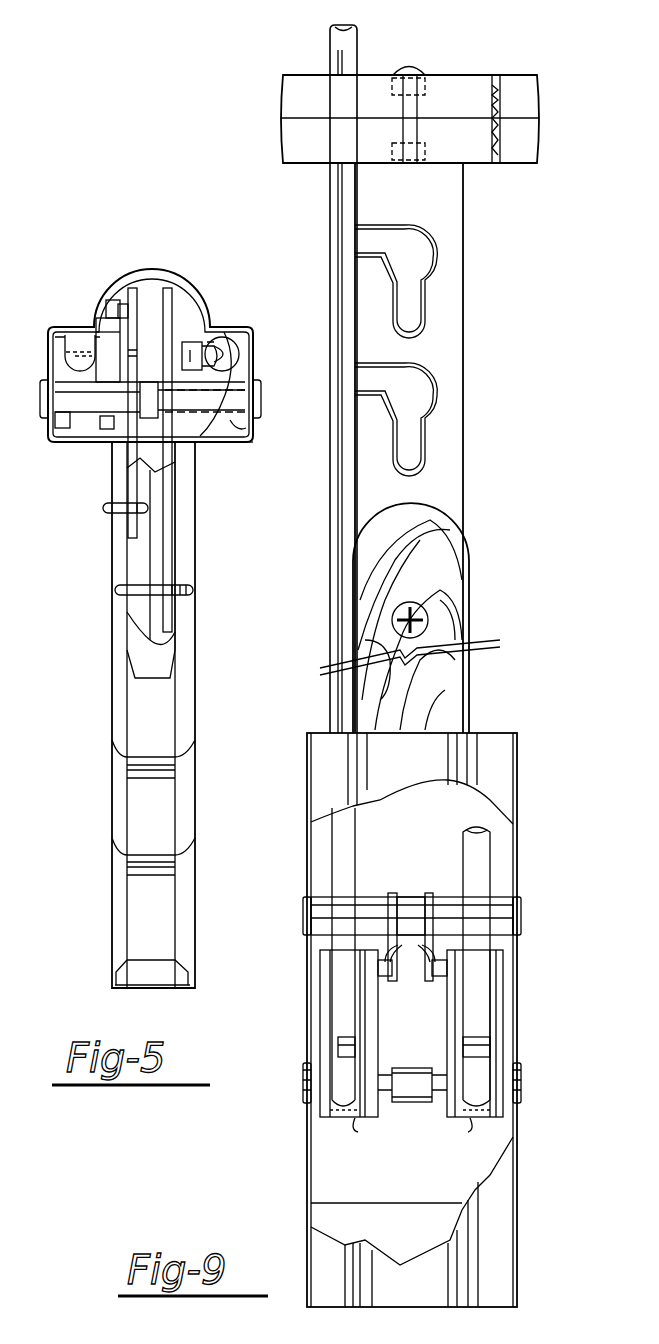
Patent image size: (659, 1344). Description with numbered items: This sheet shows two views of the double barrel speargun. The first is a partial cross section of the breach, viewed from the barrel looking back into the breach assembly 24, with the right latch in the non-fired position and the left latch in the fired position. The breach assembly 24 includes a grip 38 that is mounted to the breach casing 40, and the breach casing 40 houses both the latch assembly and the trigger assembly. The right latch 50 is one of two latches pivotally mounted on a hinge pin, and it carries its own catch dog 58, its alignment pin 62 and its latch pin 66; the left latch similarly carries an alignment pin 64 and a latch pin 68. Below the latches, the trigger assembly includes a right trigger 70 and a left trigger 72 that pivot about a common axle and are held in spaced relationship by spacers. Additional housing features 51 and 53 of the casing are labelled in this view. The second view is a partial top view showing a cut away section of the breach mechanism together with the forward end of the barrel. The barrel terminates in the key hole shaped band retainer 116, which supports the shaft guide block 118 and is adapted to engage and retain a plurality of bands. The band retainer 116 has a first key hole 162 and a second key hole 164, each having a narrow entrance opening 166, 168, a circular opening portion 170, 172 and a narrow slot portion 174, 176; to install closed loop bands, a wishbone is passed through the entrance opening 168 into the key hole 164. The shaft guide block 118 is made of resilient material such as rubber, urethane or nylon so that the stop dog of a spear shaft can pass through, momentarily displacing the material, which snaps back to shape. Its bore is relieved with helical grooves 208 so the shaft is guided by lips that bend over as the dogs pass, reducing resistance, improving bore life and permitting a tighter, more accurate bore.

In FIG. 5, the breach assembly 24 is at (214, 212).
In FIG. 5, the grip 38 is at (112, 710).
In FIG. 5, the breach casing 40 is at (155, 272).
In FIG. 5, the right latch 50 is at (108, 312).
In FIG. 5, the housing base 51 is at (52, 442).
In FIG. 5, the housing wall 53 is at (245, 442).
In FIG. 5, the catch dog 58 is at (80, 348).
In FIG. 5, the alignment pin 62 is at (70, 332).
In FIG. 5, the alignment pin 64 is at (222, 342).
In FIG. 5, the latch pin 66 is at (118, 300).
In FIG. 5, the latch pin 68 is at (188, 312).
In FIG. 5, the right trigger 70 is at (132, 288).
In FIG. 5, the left trigger 72 is at (167, 300).
In FIG. 9, the band retainer 116 is at (452, 208).
In FIG. 9, the shaft guide block 118 is at (462, 95).
In FIG. 9, the first key hole 162 is at (450, 228).
In FIG. 9, the second key hole 164 is at (440, 378).
In FIG. 9, the narrow entrance opening 166 is at (372, 245).
In FIG. 9, the narrow entrance opening 168 is at (372, 373).
In FIG. 9, the circular opening portion 170 is at (414, 258).
In FIG. 9, the circular opening portion 172 is at (412, 400).
In FIG. 9, the narrow slot portion 174 is at (408, 324).
In FIG. 9, the narrow slot portion 176 is at (407, 460).
In FIG. 9, the helical grooves 208 is at (500, 110).